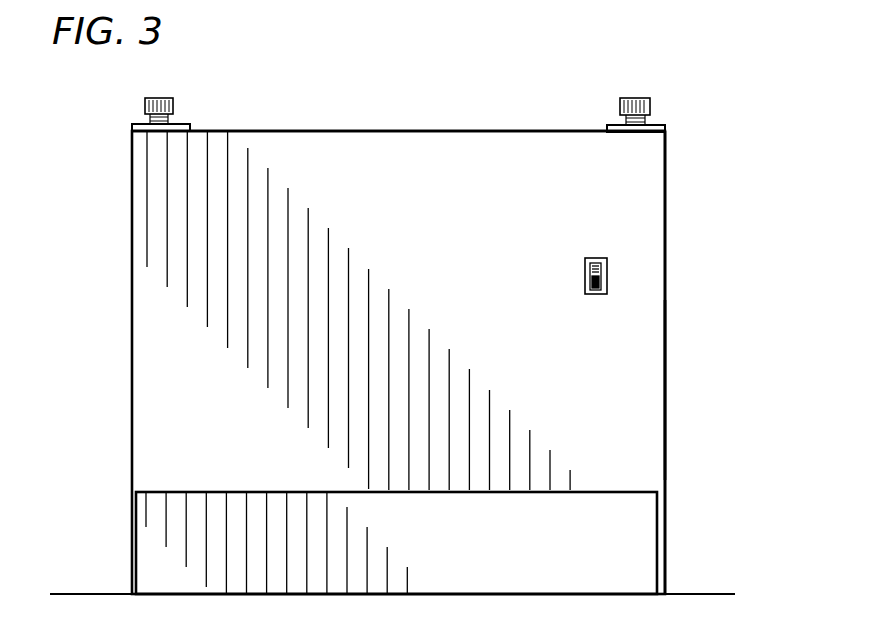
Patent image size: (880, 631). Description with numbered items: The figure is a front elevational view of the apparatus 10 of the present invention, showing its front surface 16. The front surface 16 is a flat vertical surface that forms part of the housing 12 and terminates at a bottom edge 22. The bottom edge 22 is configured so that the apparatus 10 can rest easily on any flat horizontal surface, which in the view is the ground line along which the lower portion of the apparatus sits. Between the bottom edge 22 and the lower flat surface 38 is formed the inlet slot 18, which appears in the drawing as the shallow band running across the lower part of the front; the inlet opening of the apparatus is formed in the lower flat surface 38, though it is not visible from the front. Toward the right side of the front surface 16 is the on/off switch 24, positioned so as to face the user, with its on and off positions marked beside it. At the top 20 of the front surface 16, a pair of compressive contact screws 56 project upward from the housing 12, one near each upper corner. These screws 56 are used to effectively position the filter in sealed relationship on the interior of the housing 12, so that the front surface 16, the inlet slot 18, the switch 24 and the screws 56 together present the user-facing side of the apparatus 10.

The apparatus 10 is at (683, 195).
The housing 12 is at (665, 265).
The front surface 16 is at (648, 366).
The inlet slot 18 is at (638, 530).
The top 20 is at (335, 131).
The bottom edge 22 is at (668, 590).
The on/off switch 24 is at (585, 270).
The lower flat surface 38 is at (535, 493).
The compressive contact screws 56 is at (165, 97).